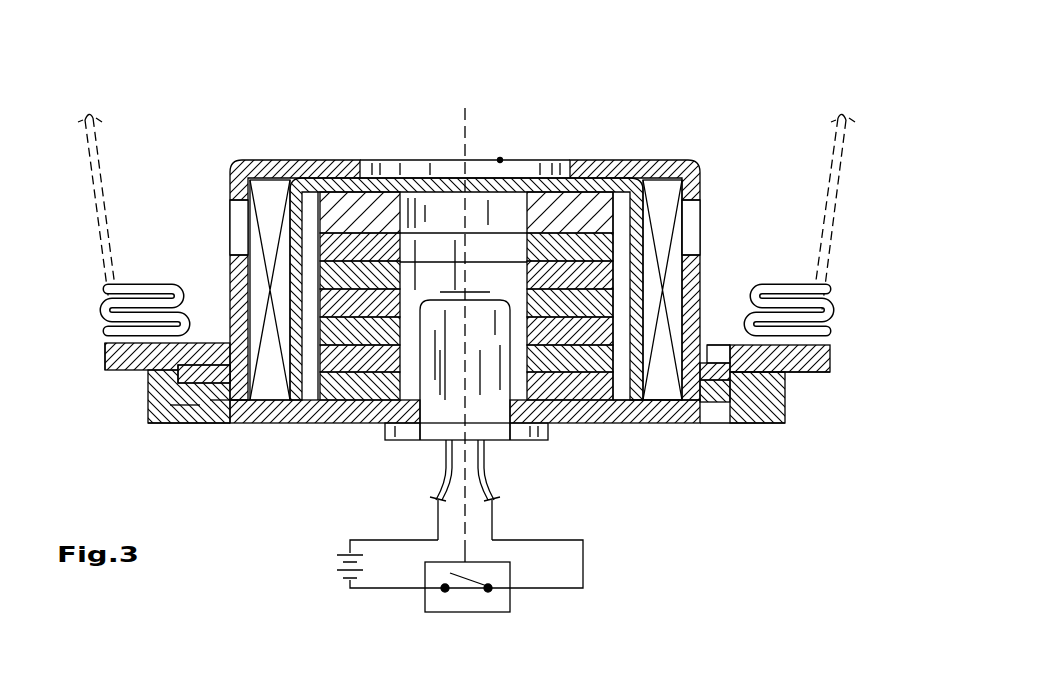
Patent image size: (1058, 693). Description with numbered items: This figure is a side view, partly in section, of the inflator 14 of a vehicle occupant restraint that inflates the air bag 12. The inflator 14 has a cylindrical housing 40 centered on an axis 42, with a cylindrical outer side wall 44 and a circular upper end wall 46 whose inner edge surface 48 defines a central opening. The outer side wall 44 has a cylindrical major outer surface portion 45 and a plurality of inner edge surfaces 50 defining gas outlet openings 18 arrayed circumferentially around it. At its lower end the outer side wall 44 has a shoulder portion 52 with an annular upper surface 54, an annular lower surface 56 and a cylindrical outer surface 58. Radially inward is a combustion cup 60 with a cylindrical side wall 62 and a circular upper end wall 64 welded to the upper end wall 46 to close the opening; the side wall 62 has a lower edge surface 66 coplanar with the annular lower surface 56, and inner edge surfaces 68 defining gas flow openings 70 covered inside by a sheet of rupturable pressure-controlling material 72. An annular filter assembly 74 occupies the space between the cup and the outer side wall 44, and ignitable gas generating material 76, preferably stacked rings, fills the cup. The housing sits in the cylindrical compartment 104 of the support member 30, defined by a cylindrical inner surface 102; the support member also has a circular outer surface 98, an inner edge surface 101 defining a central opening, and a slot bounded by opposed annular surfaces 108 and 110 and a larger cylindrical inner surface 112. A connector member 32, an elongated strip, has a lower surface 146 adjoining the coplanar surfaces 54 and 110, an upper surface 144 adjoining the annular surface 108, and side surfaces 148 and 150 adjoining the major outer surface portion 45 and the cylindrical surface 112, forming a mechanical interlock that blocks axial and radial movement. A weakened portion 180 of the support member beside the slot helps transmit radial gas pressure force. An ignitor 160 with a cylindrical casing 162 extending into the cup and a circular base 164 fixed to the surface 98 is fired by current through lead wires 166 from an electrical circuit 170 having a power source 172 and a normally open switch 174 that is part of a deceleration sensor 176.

The air bag 12 is at (100, 212).
The inflator 14 is at (333, 116).
The gas outlet openings 18 is at (230, 205).
The support member 30 is at (103, 358).
The connector member 32 is at (797, 307).
The housing 40 is at (224, 162).
The axis 42 is at (464, 110).
The outer side wall 44 is at (236, 280).
The major outer surface portion 45 is at (246, 265).
The upper end wall 46 is at (282, 158).
The inner edge surface 48 is at (400, 160).
The inner edge surfaces 50 is at (240, 230).
The shoulder portion 52 is at (220, 402).
The annular upper surface 54 is at (162, 405).
The annular lower surface 56 is at (236, 402).
The cylindrical outer surface 58 is at (188, 405).
The combustion cup 60 is at (500, 158).
The side wall 62 is at (667, 168).
The upper end wall 64 is at (545, 178).
The lower edge surface 66 is at (630, 402).
The inner edge surfaces 68 is at (642, 402).
The gas flow openings 70 is at (632, 362).
The rupturable pressure-controlling material 72 is at (307, 368).
The filter assembly 74 is at (676, 262).
The gas generating material 76 is at (555, 272).
The circular outer surface 98 is at (316, 425).
The inner edge surface 101 is at (500, 415).
The cylindrical inner surface 102 is at (218, 352).
The cylindrical compartment 104 is at (210, 338).
The annular surface 108 is at (762, 345).
The annular surface 110 is at (785, 420).
The cylindrical inner surface 112 is at (752, 378).
The upper surface 144 is at (718, 343).
The lower surface 146 is at (742, 395).
The side surface 148 is at (700, 402).
The side surface 150 is at (752, 360).
The ignitor 160 is at (473, 298).
The cylindrical casing 162 is at (440, 395).
The circular base 164 is at (440, 432).
The lead wires 166 is at (480, 455).
The electrical circuit 170 is at (598, 538).
The power source 172 is at (345, 553).
The switch 174 is at (466, 586).
The deceleration sensor 176 is at (510, 605).
The weakened portion 180 is at (212, 365).